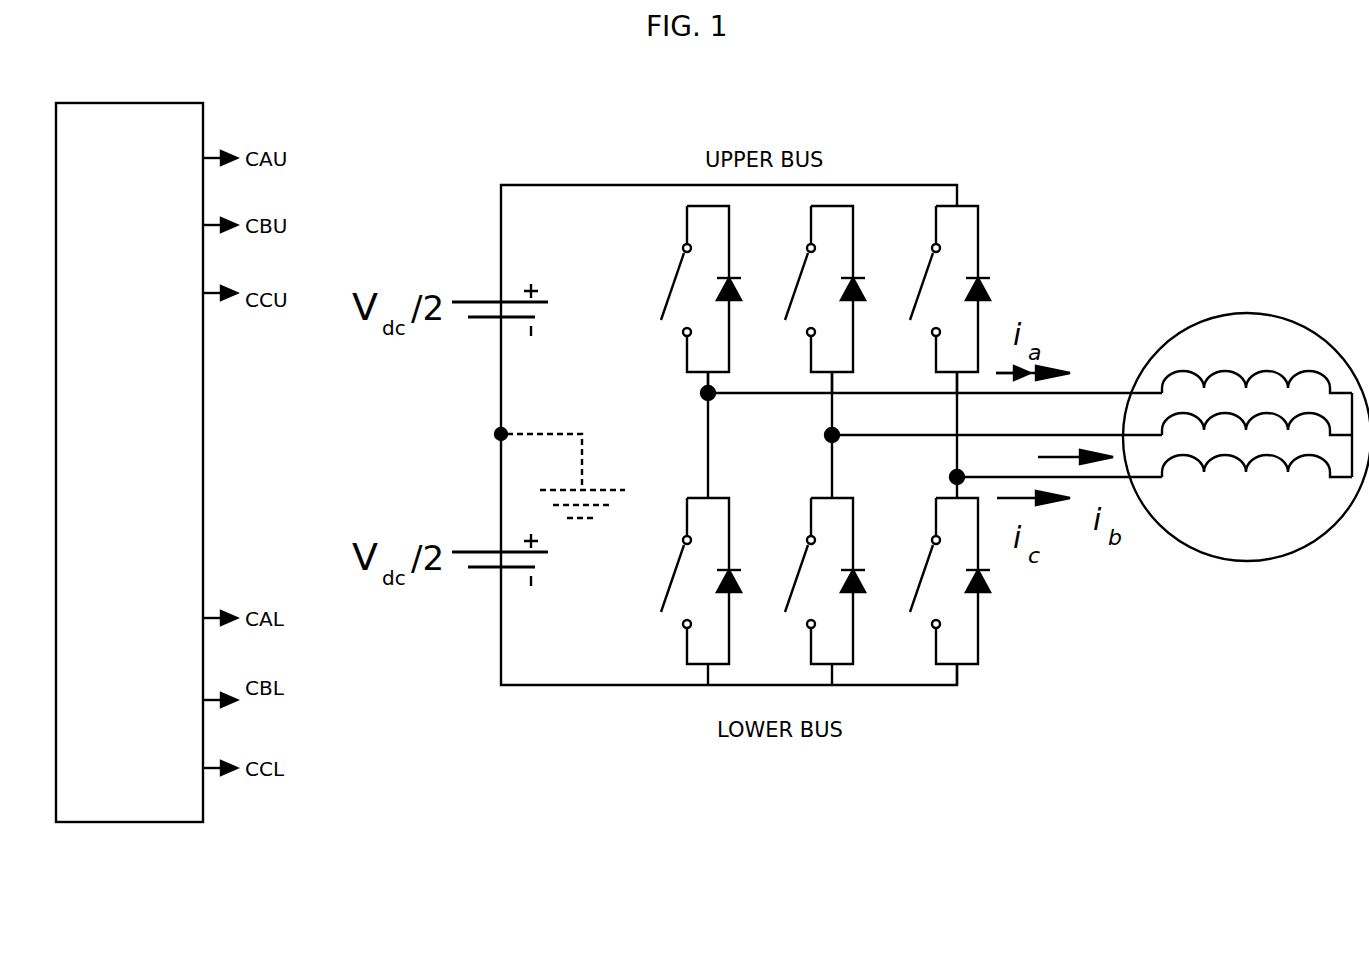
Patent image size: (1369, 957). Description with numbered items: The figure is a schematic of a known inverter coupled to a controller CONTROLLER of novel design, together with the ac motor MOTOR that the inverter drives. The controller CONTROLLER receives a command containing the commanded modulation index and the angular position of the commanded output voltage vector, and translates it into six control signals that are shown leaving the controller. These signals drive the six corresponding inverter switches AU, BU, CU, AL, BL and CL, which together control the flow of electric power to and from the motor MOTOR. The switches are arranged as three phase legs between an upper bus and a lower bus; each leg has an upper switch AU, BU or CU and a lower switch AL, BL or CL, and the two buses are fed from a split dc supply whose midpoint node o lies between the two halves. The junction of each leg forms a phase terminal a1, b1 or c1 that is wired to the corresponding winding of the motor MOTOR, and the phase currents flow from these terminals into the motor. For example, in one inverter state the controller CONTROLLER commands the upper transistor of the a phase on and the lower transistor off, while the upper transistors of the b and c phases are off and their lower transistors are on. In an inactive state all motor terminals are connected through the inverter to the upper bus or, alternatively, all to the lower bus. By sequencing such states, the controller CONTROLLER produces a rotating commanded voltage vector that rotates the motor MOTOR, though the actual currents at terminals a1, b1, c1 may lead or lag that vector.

The controller CONTROLLER is at (137, 95).
The dc link midpoint / neutral node o is at (535, 468).
The upper switch of the a phase AU is at (689, 299).
The upper switch of the b phase BU is at (814, 299).
The upper switch of the c phase CU is at (940, 299).
The lower switch of the a phase AL is at (689, 591).
The lower switch of the b phase BL is at (814, 591).
The lower switch of the c phase CL is at (939, 591).
The phase terminal a a1 is at (904, 411).
The phase terminal b b1 is at (966, 444).
The phase terminal c c1 is at (1029, 484).
The ac motor MOTOR is at (1246, 379).